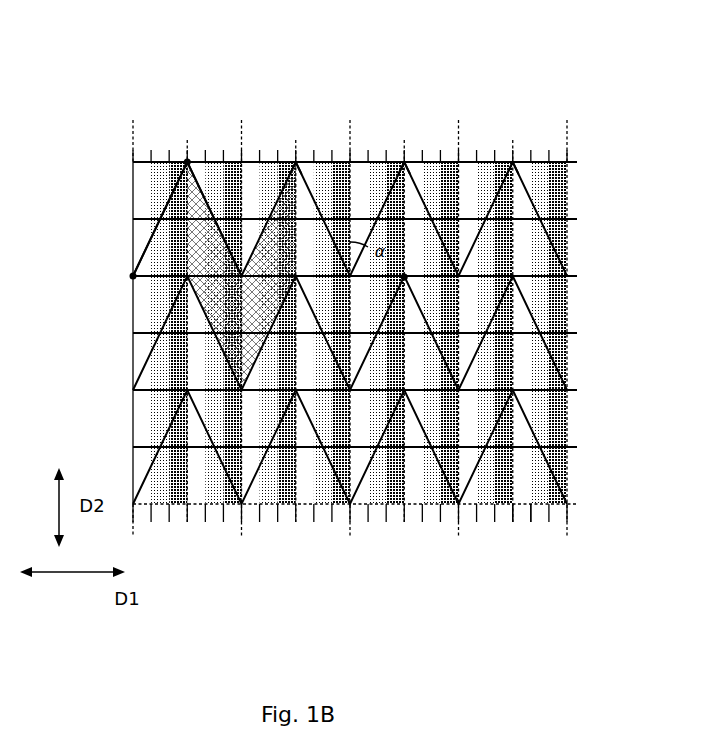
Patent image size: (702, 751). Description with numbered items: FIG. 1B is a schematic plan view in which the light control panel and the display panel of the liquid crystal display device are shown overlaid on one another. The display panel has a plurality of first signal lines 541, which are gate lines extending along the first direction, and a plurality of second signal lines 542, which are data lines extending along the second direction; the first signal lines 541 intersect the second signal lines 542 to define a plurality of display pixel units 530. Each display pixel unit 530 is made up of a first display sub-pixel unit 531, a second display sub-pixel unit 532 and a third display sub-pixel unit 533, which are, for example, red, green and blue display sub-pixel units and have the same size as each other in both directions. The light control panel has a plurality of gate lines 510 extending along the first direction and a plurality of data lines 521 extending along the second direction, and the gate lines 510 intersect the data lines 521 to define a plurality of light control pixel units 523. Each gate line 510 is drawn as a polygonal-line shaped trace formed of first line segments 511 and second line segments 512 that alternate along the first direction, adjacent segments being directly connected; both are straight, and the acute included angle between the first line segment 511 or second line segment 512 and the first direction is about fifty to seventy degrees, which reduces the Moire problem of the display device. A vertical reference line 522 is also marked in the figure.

The gate line 510 is at (223, 65).
The first line segment 511 is at (181, 160).
The second line segment 512 is at (195, 160).
The data line 521 is at (513, 162).
The vertical reference line 522 is at (567, 137).
The light control pixel unit 523 is at (283, 163).
The display pixel unit 530 is at (369, 418).
The first display sub-pixel unit 531 is at (523, 497).
The second display sub-pixel unit 532 is at (540, 495).
The third display sub-pixel unit 533 is at (555, 497).
The first signal line 541 is at (130, 447).
The second signal line 542 is at (258, 513).